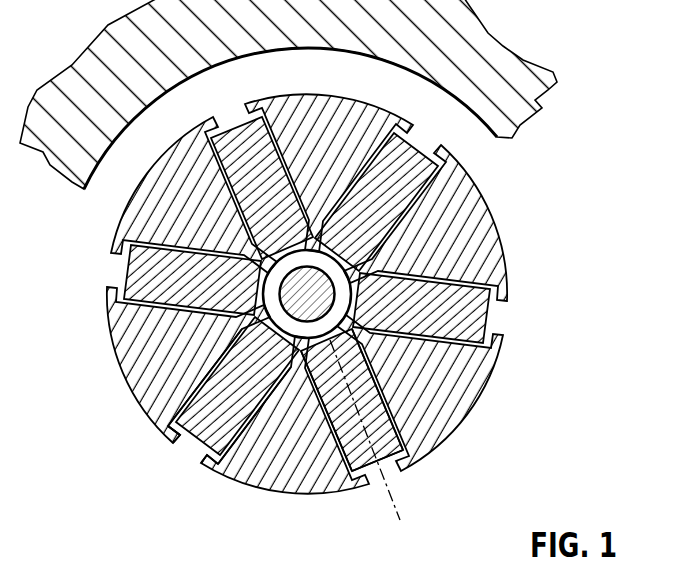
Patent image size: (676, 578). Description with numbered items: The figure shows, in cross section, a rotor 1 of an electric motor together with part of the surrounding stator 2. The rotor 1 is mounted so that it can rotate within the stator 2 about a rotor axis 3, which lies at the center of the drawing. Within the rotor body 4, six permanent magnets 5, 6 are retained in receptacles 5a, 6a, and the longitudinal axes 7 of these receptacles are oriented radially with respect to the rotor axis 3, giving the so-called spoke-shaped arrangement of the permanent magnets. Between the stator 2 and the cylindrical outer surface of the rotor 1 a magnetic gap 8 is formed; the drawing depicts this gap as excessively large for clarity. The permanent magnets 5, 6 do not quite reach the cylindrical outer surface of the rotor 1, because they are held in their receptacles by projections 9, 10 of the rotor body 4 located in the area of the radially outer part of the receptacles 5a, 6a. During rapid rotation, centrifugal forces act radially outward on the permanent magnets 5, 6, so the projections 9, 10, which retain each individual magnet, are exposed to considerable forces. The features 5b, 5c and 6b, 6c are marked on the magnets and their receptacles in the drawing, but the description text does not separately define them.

The rotor 1 is at (341, 331).
The stator 2 is at (535, 100).
The rotor axis 3 is at (310, 290).
The rotor body 4 is at (138, 207).
The permanent magnet 5 is at (367, 380).
The receptacle 5a is at (328, 420).
The magnet outer end face 5b is at (350, 467).
The magnet side face 5c is at (360, 353).
The permanent magnet 6 is at (260, 400).
The receptacle 6a is at (282, 367).
The pole segment tab face 6b is at (183, 427).
The pole segment side face 6c is at (237, 335).
The longitudinal axis 7 is at (392, 488).
The magnetic gap 8 is at (480, 154).
The projection 9 is at (173, 427).
The projection 10 is at (207, 453).